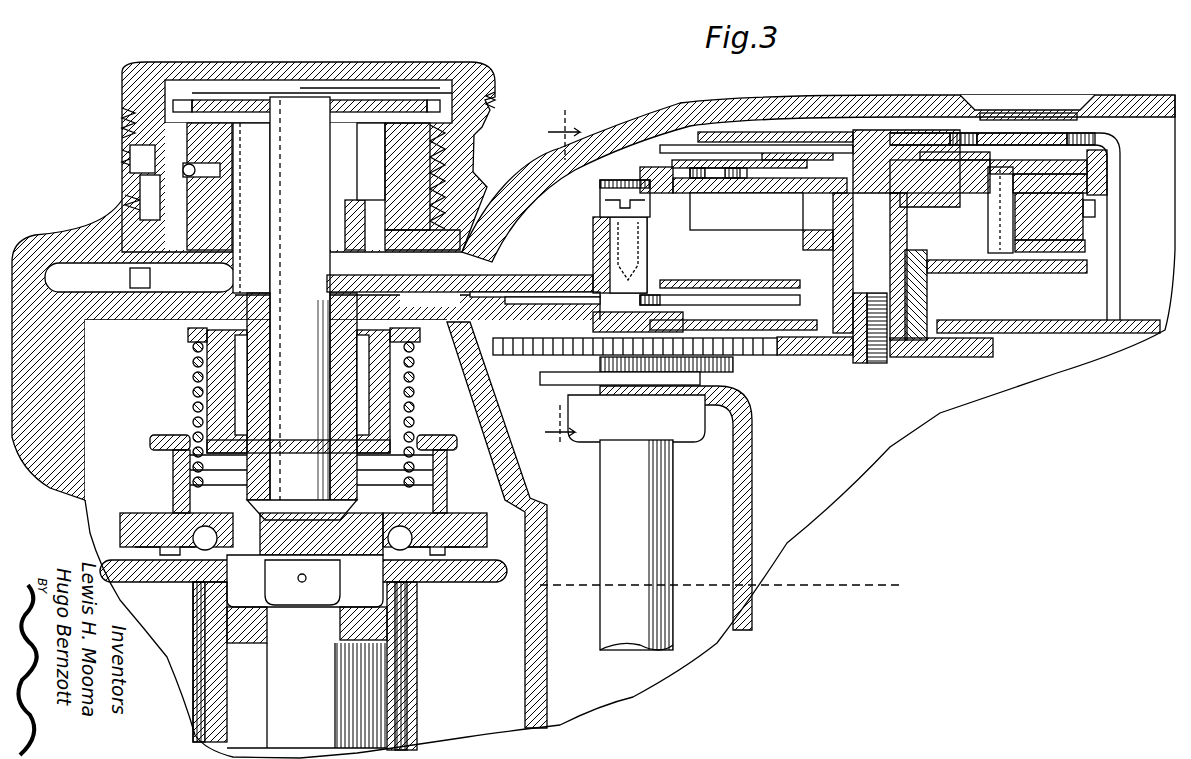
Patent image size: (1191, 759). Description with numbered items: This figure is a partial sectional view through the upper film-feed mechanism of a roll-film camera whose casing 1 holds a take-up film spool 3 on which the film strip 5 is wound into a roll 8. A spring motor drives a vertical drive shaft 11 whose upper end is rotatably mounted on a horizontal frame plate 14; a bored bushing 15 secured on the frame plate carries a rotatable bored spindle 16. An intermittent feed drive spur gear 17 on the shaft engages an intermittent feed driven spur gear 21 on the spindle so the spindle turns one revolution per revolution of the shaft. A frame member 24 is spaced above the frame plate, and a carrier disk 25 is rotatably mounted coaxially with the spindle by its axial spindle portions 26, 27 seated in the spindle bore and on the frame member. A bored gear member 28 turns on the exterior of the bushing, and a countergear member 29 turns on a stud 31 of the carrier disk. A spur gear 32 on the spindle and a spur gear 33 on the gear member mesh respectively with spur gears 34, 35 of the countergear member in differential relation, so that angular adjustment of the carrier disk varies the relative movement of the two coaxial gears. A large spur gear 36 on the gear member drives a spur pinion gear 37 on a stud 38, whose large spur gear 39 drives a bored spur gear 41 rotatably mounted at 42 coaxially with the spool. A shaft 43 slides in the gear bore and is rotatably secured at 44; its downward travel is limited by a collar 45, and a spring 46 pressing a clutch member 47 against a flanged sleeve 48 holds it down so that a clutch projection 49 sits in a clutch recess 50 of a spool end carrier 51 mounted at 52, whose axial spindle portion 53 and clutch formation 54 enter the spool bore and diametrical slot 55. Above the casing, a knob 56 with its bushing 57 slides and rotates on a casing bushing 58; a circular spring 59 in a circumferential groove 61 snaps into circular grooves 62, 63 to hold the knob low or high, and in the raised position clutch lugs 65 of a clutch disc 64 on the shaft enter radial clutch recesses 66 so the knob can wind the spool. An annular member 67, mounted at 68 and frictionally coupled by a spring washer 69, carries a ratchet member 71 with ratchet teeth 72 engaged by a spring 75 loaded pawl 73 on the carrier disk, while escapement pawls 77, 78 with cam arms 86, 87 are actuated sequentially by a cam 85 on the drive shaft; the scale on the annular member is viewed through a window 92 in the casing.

The casing 1 is at (1143, 100).
The film spool 3 is at (135, 583).
The film strip 5 is at (532, 560).
The roll 8 is at (198, 636).
The drive shaft 11 is at (688, 528).
The frame plate 14 is at (1080, 333).
The bushing 15 is at (930, 357).
The spindle 16 is at (877, 365).
The intermittent feed drive spur gear 17 is at (545, 355).
The intermittent feed driven spur gear 21 is at (812, 345).
The frame member 24 is at (1120, 140).
The carrier disk 25 is at (1075, 188).
The axial spindle portion 26 is at (860, 363).
The axial spindle portion 27 is at (880, 130).
The gear member 28 is at (930, 273).
The countergear member 29 is at (1040, 227).
The stud 31 is at (1000, 253).
The spur gear 32 is at (833, 207).
The spur gear 33 is at (803, 240).
The spur gear 34 is at (1095, 210).
The spur gear 35 is at (1060, 245).
The large spur gear 36 is at (745, 230).
The spur pinion gear 37 is at (593, 236).
The stud 38 is at (615, 258).
The large spur gear 39 is at (490, 282).
The spur gear 41 is at (130, 278).
The rotatable mounting 42 is at (232, 360).
The shaft 43 is at (262, 182).
The rotatable securing 44 is at (305, 290).
The collar 45 is at (355, 200).
The spring 46 is at (192, 407).
The clutch member 47 is at (160, 443).
The flanged sleeve 48 is at (190, 335).
The clutch projection 49 is at (265, 500).
The clutch recess 50 is at (180, 480).
The spool end carrier 51 is at (420, 518).
The rotatable mounting 52 is at (415, 530).
The axial spindle portion 53 is at (340, 618).
The clutch formation 54 is at (308, 640).
The diametrical slot 55 is at (262, 606).
The knob 56 is at (385, 62).
The bushing 57 is at (468, 160).
The bushing 58 is at (432, 150).
The circular spring 59 is at (205, 165).
The circumferential groove 61 is at (225, 160).
The circular groove 62 is at (130, 157).
The circular groove 63 is at (125, 205).
The clutch disc 64 is at (232, 100).
The clutch lugs 65 is at (182, 100).
The radial clutch recesses 66 is at (122, 122).
The annular member 67 is at (1055, 160).
The rotatable mounting 68 is at (940, 160).
The spring washer 69 is at (960, 152).
The ratchet member 71 is at (1108, 168).
The ratchet teeth 72 is at (712, 168).
The pawl 73 is at (735, 160).
The spring 75 is at (790, 152).
The escapement pawl 77 is at (646, 172).
The escapement pawl 78 is at (600, 192).
The cam 85 is at (720, 288).
The cam arm 86 is at (540, 304).
The cam arm 87 is at (530, 292).
The window 92 is at (1020, 113).